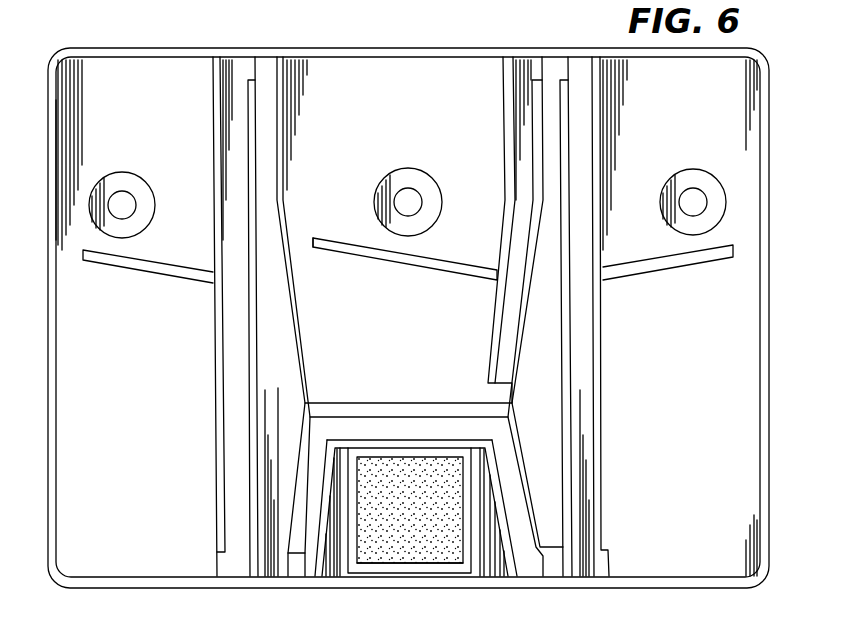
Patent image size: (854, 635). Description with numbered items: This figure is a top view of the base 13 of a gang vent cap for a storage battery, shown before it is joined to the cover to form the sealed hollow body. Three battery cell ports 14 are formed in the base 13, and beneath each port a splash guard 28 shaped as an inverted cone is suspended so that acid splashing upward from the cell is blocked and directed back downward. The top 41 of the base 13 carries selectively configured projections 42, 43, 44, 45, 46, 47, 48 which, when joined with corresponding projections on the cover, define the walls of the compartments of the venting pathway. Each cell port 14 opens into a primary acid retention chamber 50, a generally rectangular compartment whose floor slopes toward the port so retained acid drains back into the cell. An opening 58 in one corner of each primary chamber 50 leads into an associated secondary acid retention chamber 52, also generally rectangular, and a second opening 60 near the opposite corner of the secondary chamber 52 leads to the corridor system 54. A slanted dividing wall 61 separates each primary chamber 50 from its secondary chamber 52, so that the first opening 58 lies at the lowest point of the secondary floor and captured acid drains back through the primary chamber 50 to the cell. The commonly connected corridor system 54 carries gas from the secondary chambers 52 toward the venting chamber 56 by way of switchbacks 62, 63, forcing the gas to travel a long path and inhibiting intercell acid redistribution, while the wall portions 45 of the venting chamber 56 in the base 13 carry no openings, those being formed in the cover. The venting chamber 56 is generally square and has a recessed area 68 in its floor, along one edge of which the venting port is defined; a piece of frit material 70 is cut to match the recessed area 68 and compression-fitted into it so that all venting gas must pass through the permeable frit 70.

The base 13 is at (489, 18).
The battery cell port 14 is at (140, 215).
The splash guard 28 is at (125, 195).
The top of the base 41 is at (692, 367).
The projection 42 is at (213, 355).
The projection 43 is at (256, 398).
The projection 44 is at (412, 402).
The vent chamber wall portion 45 is at (368, 440).
The projection 46 is at (570, 320).
The projection 47 is at (603, 440).
The projection 48 is at (167, 55).
The primary acid retention chamber 50 is at (93, 73).
The secondary acid retention chamber 52 is at (121, 340).
The corridor system 54 is at (300, 350).
The venting chamber 56 is at (448, 452).
The opening 58 is at (303, 240).
The second opening 60 is at (488, 383).
The dividing wall 61 is at (359, 257).
The switchback 62 is at (245, 72).
The switchback 63 is at (285, 560).
The recessed area 68 is at (385, 572).
The frit material 70 is at (416, 503).